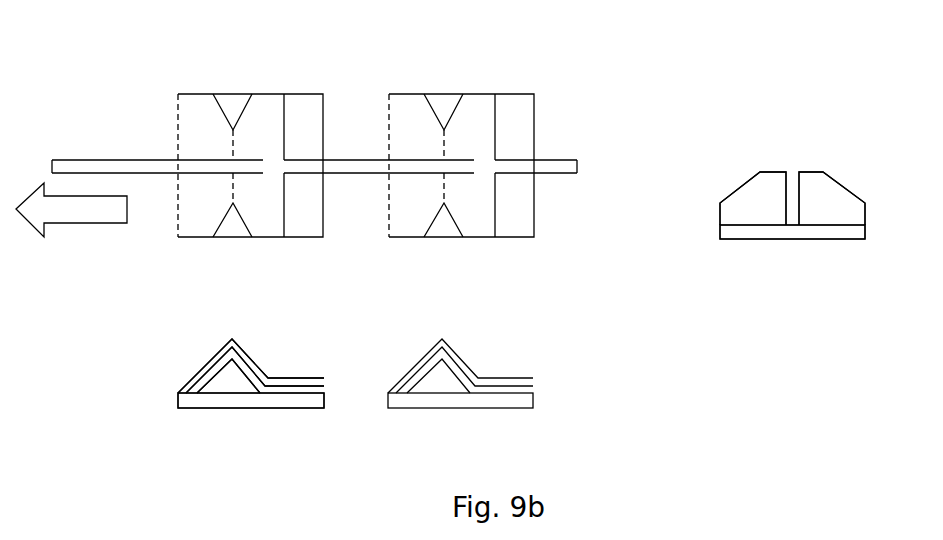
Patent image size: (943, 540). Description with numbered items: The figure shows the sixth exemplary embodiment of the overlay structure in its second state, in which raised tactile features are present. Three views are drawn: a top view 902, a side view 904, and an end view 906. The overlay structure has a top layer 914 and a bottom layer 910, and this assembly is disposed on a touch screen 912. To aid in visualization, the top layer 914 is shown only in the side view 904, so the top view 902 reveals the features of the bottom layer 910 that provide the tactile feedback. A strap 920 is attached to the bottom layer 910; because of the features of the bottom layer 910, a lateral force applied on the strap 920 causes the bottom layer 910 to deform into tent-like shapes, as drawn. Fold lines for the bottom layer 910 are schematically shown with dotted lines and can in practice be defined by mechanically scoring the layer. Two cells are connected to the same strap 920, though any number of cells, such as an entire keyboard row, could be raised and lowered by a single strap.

The top view 902 is at (159, 77).
The side view 904 is at (172, 447).
The end view 906 is at (827, 135).
The bottom layer 910 is at (207, 380).
The touch screen 912 is at (245, 400).
The top layer 914 is at (233, 342).
The strap 920 is at (110, 168).